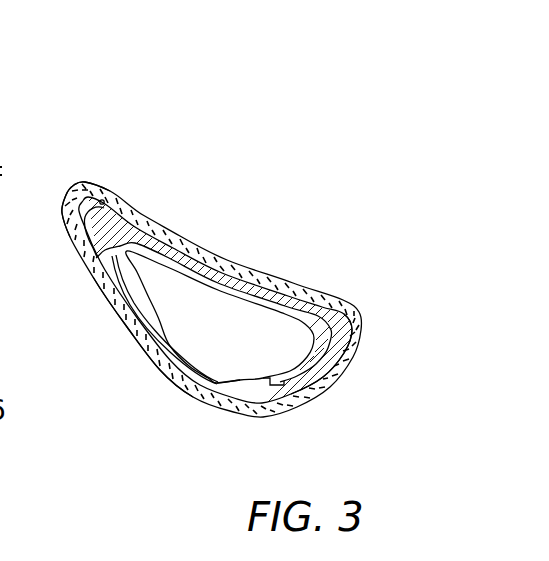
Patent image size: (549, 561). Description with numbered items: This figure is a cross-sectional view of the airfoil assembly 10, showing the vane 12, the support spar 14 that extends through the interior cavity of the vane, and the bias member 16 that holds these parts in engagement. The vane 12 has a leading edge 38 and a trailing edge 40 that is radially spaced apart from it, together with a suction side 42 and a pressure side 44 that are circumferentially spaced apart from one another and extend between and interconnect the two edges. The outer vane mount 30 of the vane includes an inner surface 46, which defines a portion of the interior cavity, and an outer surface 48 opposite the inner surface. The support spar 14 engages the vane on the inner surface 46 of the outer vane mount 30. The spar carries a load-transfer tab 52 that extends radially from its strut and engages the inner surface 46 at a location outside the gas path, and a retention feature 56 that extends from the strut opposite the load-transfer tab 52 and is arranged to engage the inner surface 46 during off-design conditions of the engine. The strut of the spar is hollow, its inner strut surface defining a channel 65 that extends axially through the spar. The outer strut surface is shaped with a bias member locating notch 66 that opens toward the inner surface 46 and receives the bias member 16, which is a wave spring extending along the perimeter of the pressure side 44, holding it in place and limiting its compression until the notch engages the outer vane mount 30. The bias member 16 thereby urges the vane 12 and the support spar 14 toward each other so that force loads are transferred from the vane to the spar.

The airfoil assembly 10 is at (322, 157).
The vane 12 is at (177, 189).
The support spar 14 is at (328, 366).
The bias member 16 is at (160, 354).
The outer vane mount 30 is at (207, 245).
The leading edge 38 is at (365, 325).
The trailing edge 40 is at (80, 180).
The suction side 42 is at (173, 395).
The pressure side 44 is at (245, 264).
The inner surface 46 is at (100, 199).
The outer surface 48 is at (113, 197).
The load-transfer tab 52 is at (308, 306).
The retention feature 56 is at (283, 392).
The channel 65 is at (234, 334).
The bias member locating notch 66 is at (219, 388).